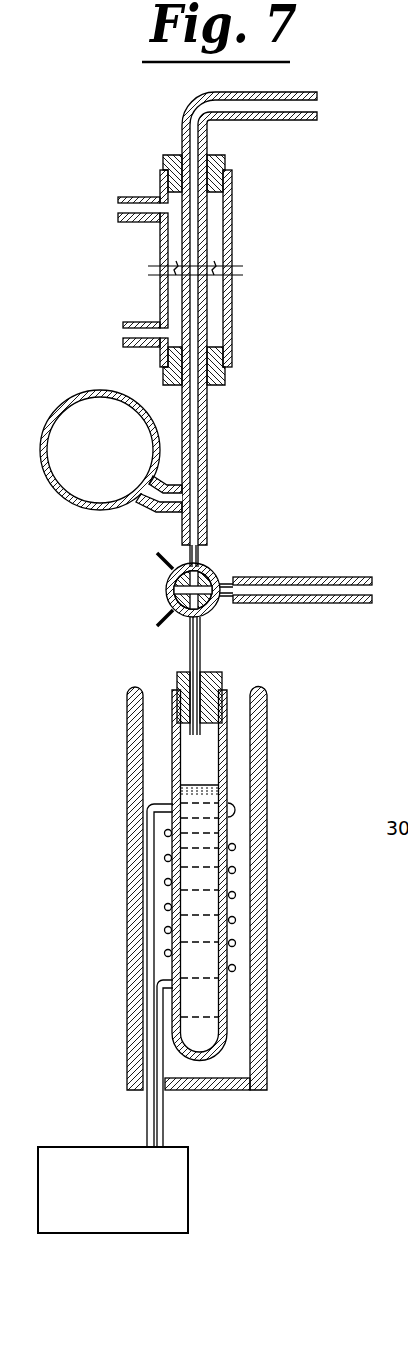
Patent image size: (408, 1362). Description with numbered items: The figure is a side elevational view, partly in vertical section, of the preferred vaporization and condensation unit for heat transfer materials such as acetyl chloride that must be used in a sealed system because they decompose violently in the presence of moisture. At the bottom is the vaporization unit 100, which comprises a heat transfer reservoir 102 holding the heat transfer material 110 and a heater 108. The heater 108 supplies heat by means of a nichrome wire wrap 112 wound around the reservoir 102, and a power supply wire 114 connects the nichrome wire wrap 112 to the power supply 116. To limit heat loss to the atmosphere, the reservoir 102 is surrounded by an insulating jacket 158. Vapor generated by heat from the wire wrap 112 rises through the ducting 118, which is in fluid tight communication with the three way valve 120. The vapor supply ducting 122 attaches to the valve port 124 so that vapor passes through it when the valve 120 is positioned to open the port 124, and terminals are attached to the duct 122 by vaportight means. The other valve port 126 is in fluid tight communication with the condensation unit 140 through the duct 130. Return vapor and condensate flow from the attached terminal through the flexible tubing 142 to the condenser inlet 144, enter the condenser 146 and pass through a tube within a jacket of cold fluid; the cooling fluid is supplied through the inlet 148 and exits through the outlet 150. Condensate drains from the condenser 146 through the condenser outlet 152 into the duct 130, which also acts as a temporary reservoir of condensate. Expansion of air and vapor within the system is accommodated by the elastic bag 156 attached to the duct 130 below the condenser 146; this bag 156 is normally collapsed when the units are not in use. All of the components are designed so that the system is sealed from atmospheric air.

The vaporization unit 100 is at (220, 889).
The heat transfer reservoir 102 is at (225, 1008).
The heater 108 is at (259, 887).
The heat transfer material 110 is at (197, 784).
The nichrome wire wrap 112 is at (234, 893).
The power supply wire 114 is at (150, 912).
The power supply 116 is at (183, 1195).
The ducting 118 is at (203, 646).
The three way valve 120 is at (172, 583).
The vapor supply ducting 122 is at (333, 578).
The valve port 124 is at (243, 578).
The valve port 126 is at (200, 557).
The duct 130 is at (208, 503).
The condensation unit 140 is at (225, 254).
The flexible tubing 142 is at (290, 121).
The condenser inlet 144 is at (190, 140).
The condenser 146 is at (230, 223).
The inlet 148 is at (135, 322).
The outlet 150 is at (135, 197).
The condenser outlet 152 is at (200, 382).
The elastic bag 156 is at (78, 390).
The insulating jacket 158 is at (263, 1062).